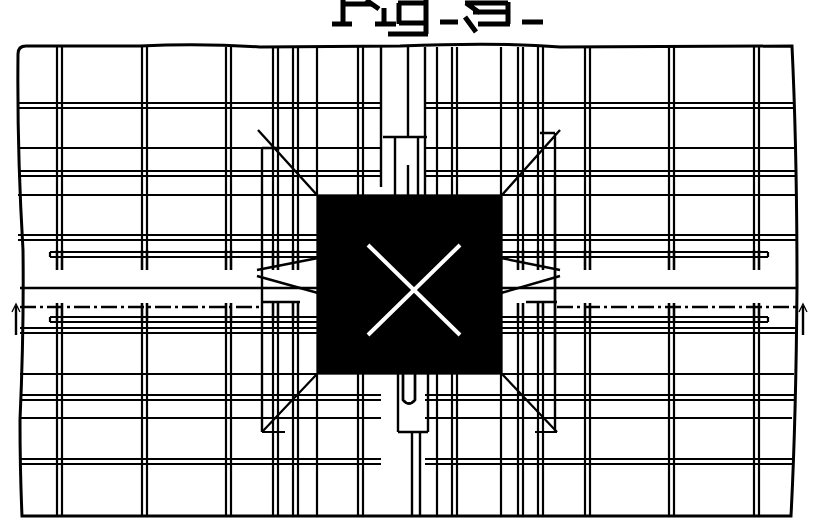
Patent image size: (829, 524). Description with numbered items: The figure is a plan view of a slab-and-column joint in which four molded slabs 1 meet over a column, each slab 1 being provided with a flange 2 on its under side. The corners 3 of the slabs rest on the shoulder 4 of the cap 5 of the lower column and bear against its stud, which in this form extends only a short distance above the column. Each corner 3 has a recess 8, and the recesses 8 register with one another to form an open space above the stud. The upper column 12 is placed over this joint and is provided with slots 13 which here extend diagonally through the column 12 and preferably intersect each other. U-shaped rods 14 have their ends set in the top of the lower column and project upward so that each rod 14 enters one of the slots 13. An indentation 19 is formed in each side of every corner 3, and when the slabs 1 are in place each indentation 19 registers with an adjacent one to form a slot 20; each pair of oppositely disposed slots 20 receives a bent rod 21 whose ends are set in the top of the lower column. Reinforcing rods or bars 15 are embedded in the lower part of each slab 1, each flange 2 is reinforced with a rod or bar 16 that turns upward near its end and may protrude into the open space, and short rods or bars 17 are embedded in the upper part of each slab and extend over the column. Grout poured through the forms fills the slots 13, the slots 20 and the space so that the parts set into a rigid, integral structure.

The slab 1 is at (407, 280).
The flange 2 is at (273, 80).
The corner 3 is at (409, 284).
The shoulder 4 is at (407, 332).
The cap 5 is at (555, 215).
The recess 8 is at (502, 220).
The column 12 is at (410, 403).
The slot 13 is at (355, 195).
The rod 14 is at (407, 264).
The reinforcing rods or bars 15 is at (226, 76).
The rod or bar 16 is at (381, 123).
The short rods or bars 17 is at (381, 75).
The indentation 19 is at (425, 130).
The slot 20 is at (400, 135).
The rod 21 is at (408, 272).